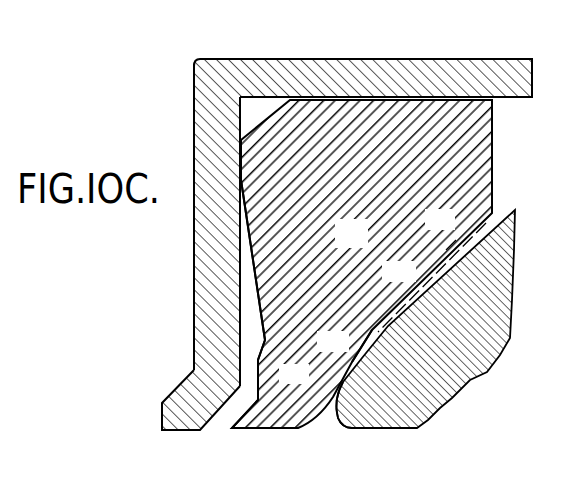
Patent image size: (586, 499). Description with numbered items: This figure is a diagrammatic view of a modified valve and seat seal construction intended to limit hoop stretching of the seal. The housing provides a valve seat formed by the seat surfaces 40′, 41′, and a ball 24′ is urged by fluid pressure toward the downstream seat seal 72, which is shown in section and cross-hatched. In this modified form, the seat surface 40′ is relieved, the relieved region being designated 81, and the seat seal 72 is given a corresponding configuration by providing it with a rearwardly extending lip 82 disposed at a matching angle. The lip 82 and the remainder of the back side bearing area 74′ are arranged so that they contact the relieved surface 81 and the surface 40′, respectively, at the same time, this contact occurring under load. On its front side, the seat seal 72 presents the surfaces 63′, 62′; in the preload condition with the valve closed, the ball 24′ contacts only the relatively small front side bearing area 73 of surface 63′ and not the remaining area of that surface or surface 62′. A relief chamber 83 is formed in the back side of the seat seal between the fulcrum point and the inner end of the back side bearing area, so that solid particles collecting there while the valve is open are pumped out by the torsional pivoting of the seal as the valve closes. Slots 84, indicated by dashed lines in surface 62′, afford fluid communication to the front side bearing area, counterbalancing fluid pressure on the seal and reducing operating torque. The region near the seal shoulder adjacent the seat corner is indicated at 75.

The seat surface 40′ is at (240, 257).
The seat surface 41′ is at (430, 97).
The relieved surface 81 is at (187, 382).
The seat seal 72 is at (364, 244).
The groove 75 is at (237, 180).
The relief chamber 83 is at (263, 323).
The back side bearing area 74′ is at (259, 379).
The rearwardly extending lip 82 is at (245, 413).
The ball 24′ is at (467, 378).
The front side bearing area 73 is at (320, 423).
The seal surface 63′ is at (356, 360).
The seal surface 62′ is at (411, 292).
The slots 84 is at (448, 247).